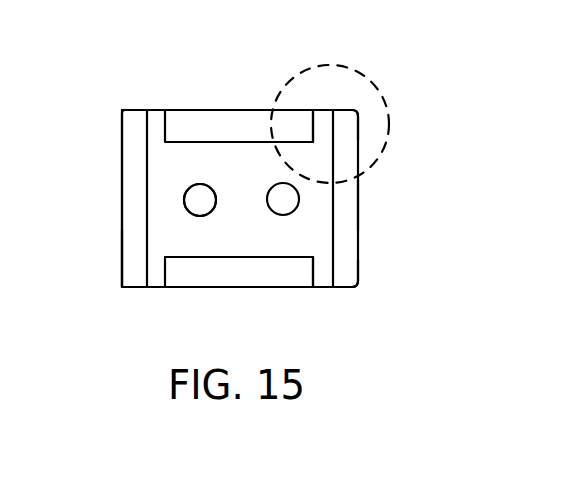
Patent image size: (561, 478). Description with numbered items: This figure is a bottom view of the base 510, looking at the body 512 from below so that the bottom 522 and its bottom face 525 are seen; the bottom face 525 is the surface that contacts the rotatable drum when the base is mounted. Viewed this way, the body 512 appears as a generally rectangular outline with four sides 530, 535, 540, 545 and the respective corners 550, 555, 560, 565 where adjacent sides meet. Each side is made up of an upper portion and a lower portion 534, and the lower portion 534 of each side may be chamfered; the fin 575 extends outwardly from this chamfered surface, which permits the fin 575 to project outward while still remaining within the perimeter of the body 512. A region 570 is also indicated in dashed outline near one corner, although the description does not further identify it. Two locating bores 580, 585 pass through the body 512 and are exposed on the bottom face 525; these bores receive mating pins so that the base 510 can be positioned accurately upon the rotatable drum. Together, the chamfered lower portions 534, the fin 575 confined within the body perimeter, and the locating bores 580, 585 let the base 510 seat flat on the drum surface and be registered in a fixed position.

The base 510 is at (114, 278).
The body 512 is at (122, 141).
The bottom 522 is at (296, 253).
The bottom face 525 is at (300, 258).
The side 530 is at (300, 109).
The lower portion 534 is at (188, 110).
The side 535 is at (360, 207).
The side 540 is at (172, 287).
The side 545 is at (122, 248).
The corner 550 is at (350, 109).
The corner 555 is at (360, 288).
The corner 560 is at (122, 287).
The corner 565 is at (122, 110).
The heat zone 570 is at (389, 146).
The fin 575 is at (322, 109).
The locating bore 580 is at (185, 206).
The locating bore 585 is at (276, 187).